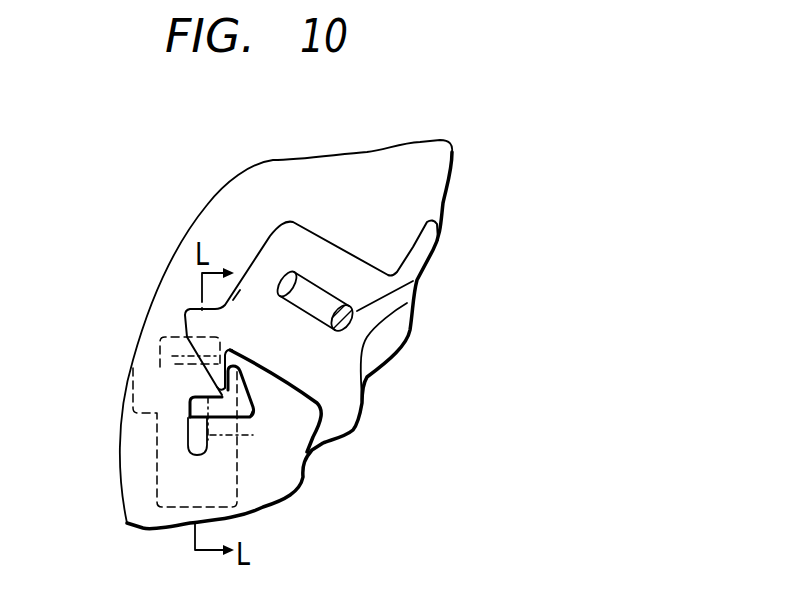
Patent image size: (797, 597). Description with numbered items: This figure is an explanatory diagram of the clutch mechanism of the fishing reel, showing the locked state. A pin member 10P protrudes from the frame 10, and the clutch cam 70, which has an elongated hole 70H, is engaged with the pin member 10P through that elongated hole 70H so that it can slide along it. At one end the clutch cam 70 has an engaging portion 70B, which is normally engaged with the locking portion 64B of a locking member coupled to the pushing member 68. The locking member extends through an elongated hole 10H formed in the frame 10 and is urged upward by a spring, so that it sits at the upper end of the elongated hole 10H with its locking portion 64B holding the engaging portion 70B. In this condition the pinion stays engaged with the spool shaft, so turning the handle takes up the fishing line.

The frame 10 is at (375, 177).
The elongated hole 10H is at (192, 440).
The pin member 10P is at (417, 280).
The locking portion 64B is at (253, 410).
The pushing member 68 is at (175, 335).
The clutch cam 70 is at (290, 247).
The engaging portion 70B is at (217, 383).
The elongated hole 70H is at (275, 272).